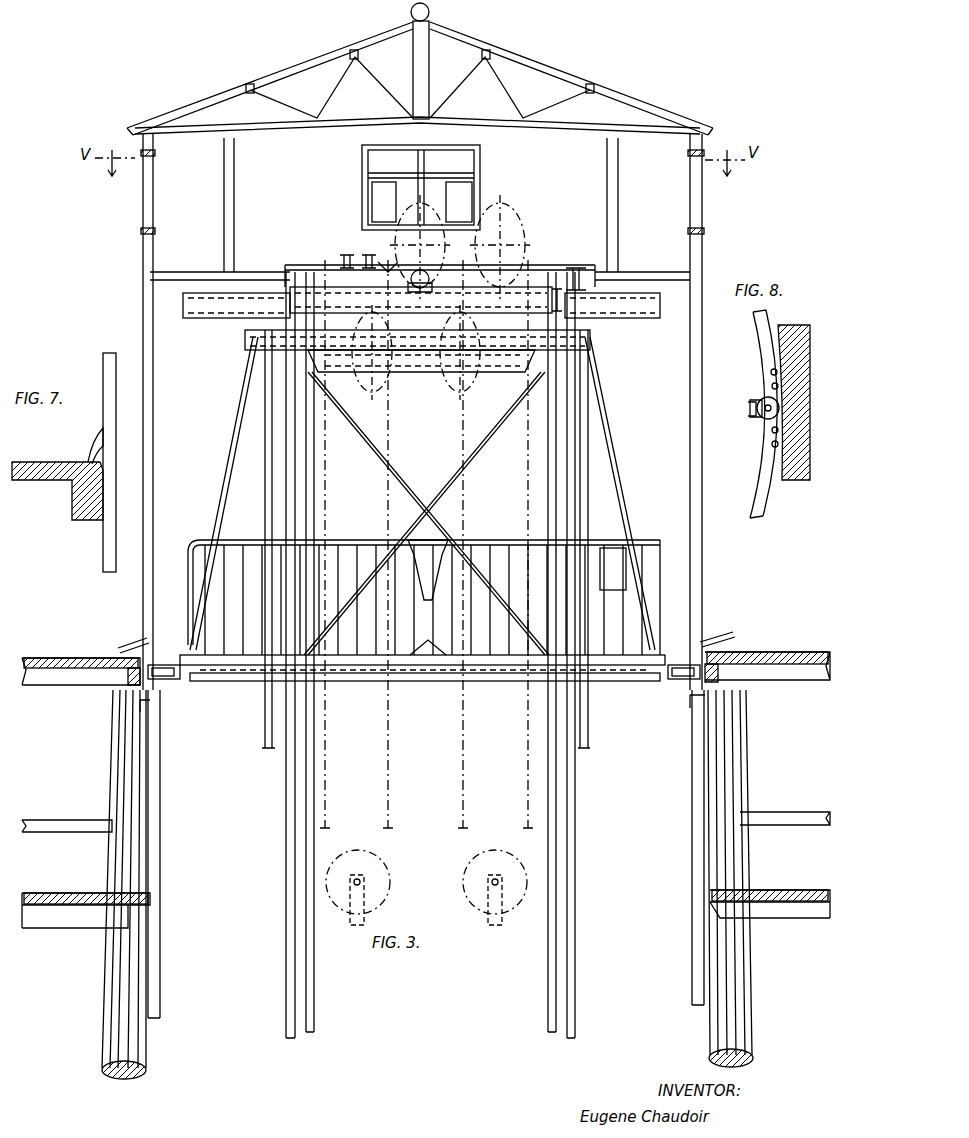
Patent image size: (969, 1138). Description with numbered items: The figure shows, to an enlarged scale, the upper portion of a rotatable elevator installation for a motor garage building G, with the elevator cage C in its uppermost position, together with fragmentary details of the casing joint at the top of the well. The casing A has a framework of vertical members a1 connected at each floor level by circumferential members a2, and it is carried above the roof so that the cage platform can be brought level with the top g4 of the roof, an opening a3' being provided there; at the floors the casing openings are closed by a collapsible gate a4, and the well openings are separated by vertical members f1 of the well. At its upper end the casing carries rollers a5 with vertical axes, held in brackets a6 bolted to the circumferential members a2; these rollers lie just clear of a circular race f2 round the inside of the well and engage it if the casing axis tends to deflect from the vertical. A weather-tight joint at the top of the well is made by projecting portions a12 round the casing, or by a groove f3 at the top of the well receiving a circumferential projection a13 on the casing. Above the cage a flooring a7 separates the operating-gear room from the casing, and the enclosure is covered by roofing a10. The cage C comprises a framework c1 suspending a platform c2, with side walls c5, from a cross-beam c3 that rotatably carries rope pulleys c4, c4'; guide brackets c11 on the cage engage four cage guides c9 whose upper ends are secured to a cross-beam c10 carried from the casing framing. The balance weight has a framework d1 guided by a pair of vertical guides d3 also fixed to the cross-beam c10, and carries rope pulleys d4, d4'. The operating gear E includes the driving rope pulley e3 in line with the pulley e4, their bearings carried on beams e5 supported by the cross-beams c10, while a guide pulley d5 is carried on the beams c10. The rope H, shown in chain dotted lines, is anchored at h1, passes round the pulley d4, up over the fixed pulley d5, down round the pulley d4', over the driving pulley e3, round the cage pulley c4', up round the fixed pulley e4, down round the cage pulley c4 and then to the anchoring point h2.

In FIG. 3, the vertical members a1 is at (175, 488).
In FIG. 3, the circumferential members a2 is at (160, 728).
In FIG. 8, the circumferential members a2 is at (760, 505).
In FIG. 8, the opening a3' is at (746, 414).
In FIG. 3, the collapsible gate a4 is at (692, 490).
In FIG. 3, the rollers a5 is at (168, 682).
In FIG. 8, the rollers a5 is at (755, 390).
In FIG. 8, the brackets a6 is at (755, 420).
In FIG. 3, the flooring a7 is at (170, 296).
In FIG. 3, the roofing a10 is at (600, 100).
In FIG. 3, the projecting portions a12 is at (128, 645).
In FIG. 7, the circumferential projection a13 is at (90, 440).
In FIG. 3, the framework c1 is at (245, 515).
In FIG. 3, the platform c2 is at (428, 652).
In FIG. 3, the cross-beam c3 is at (415, 380).
In FIG. 3, the rope pulley c4 is at (370, 359).
In FIG. 3, the rope pulley c4' is at (462, 359).
In FIG. 3, the side walls c5 is at (470, 530).
In FIG. 3, the guides c9 is at (287, 380).
In FIG. 3, the cross-beam c10 is at (235, 310).
In FIG. 3, the guide brackets c11 is at (290, 295).
In FIG. 3, the framework d1 is at (350, 918).
In FIG. 3, the vertical guides d3 is at (314, 440).
In FIG. 3, the rope pulley d4 is at (358, 862).
In FIG. 3, the rope pulley d4' is at (495, 862).
In FIG. 3, the guide pulley d5 is at (386, 253).
In FIG. 3, the driving rope pulley e3 is at (540, 210).
In FIG. 3, the rope pulley e4 is at (432, 230).
In FIG. 3, the beams e5 is at (576, 248).
In FIG. 3, the vertical members f1 is at (112, 864).
In FIG. 3, the circular race f2 is at (125, 680).
In FIG. 8, the circular race f2 is at (800, 470).
In FIG. 7, the groove f3 is at (70, 462).
In FIG. 3, the top of the roof g4 is at (55, 655).
In FIG. 3, the anchoring point h1 is at (347, 253).
In FIG. 3, the anchoring point h2 is at (369, 253).
In FIG. 3, the casing A is at (118, 306).
In FIG. 3, the elevator cage C is at (500, 680).
In FIG. 3, the cage operating gear E is at (463, 247).
In FIG. 3, the building G is at (426, 846).
In FIG. 3, the rope H is at (325, 488).